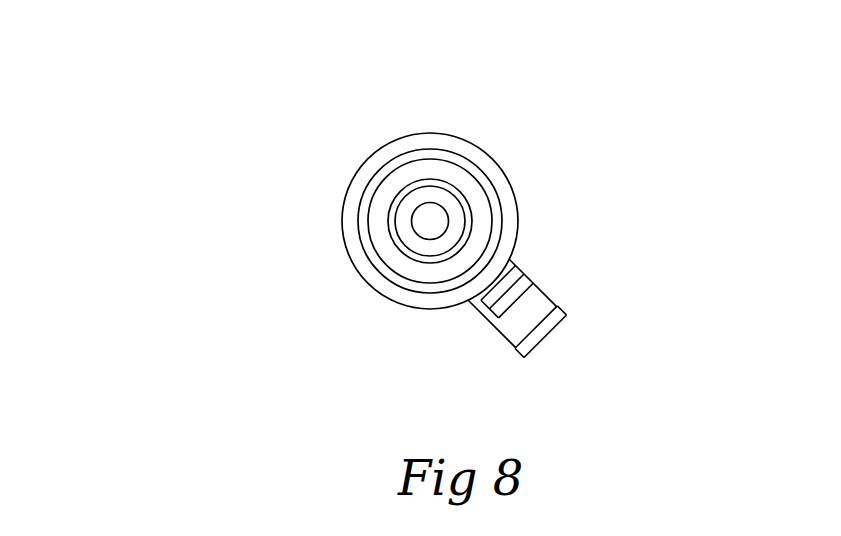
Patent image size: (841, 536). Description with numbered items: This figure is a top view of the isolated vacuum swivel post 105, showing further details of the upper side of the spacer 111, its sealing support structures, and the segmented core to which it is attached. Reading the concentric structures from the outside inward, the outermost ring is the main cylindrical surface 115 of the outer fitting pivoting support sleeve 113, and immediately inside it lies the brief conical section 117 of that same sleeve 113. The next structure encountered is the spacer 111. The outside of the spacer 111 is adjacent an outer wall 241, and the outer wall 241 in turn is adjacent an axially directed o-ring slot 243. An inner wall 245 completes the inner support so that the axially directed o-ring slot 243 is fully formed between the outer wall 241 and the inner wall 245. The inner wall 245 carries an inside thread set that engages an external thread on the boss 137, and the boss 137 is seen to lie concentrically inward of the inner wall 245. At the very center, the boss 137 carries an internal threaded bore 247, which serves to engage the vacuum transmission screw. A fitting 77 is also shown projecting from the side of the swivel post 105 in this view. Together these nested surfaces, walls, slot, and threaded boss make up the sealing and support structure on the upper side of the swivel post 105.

The isolated vacuum swivel post 105 is at (288, 258).
The outer fitting pivoting support sleeve 113 is at (393, 142).
The main cylindrical surface 115 is at (457, 135).
The brief conical section 117 is at (481, 160).
The spacer 111 is at (496, 191).
The inner wall 245 is at (407, 256).
The outer wall 241 is at (494, 241).
The boss 137 is at (450, 212).
The internal threaded bore 247 is at (418, 217).
The axially directed o-ring slot 243 is at (428, 272).
The connector 77 is at (568, 316).